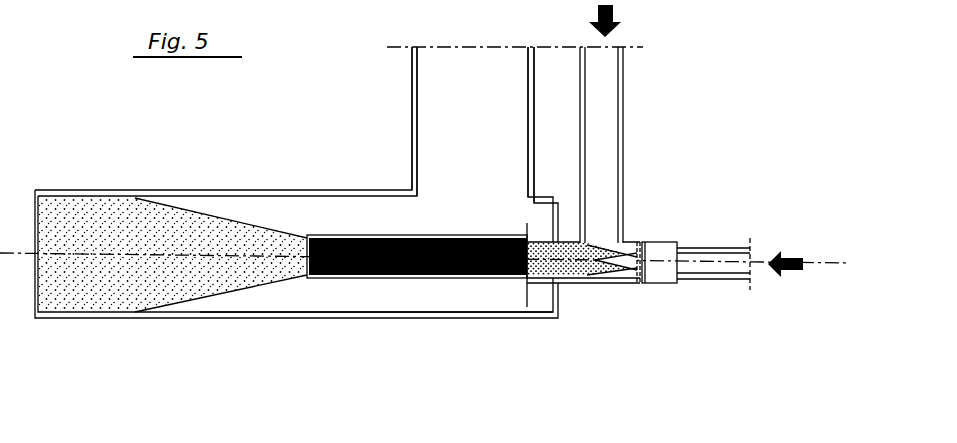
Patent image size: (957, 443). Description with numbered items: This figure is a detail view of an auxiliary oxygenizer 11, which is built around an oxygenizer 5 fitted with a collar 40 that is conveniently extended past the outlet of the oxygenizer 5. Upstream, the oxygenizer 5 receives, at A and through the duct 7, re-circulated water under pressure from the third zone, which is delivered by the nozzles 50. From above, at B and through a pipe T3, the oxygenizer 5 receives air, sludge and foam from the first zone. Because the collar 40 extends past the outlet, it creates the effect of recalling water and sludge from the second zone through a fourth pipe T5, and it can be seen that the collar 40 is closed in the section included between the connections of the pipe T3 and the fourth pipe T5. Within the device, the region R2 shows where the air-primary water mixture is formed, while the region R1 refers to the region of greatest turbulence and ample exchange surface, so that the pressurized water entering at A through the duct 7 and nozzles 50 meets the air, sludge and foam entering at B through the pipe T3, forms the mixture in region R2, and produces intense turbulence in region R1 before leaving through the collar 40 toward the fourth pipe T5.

The auxiliary oxygenizer 11 is at (238, 362).
The collar 40 is at (202, 191).
The oxygenizer 5 is at (354, 296).
The region in which the air-primary water mixture is formed R2 is at (412, 280).
The region of greatest turbulence R1 is at (576, 280).
The nozzles 50 is at (627, 242).
The duct 7 is at (705, 250).
The fourth pipe T5 is at (412, 110).
The pipe T3 is at (610, 156).
The air inlet direction B is at (527, 33).
The water inlet direction A is at (795, 255).